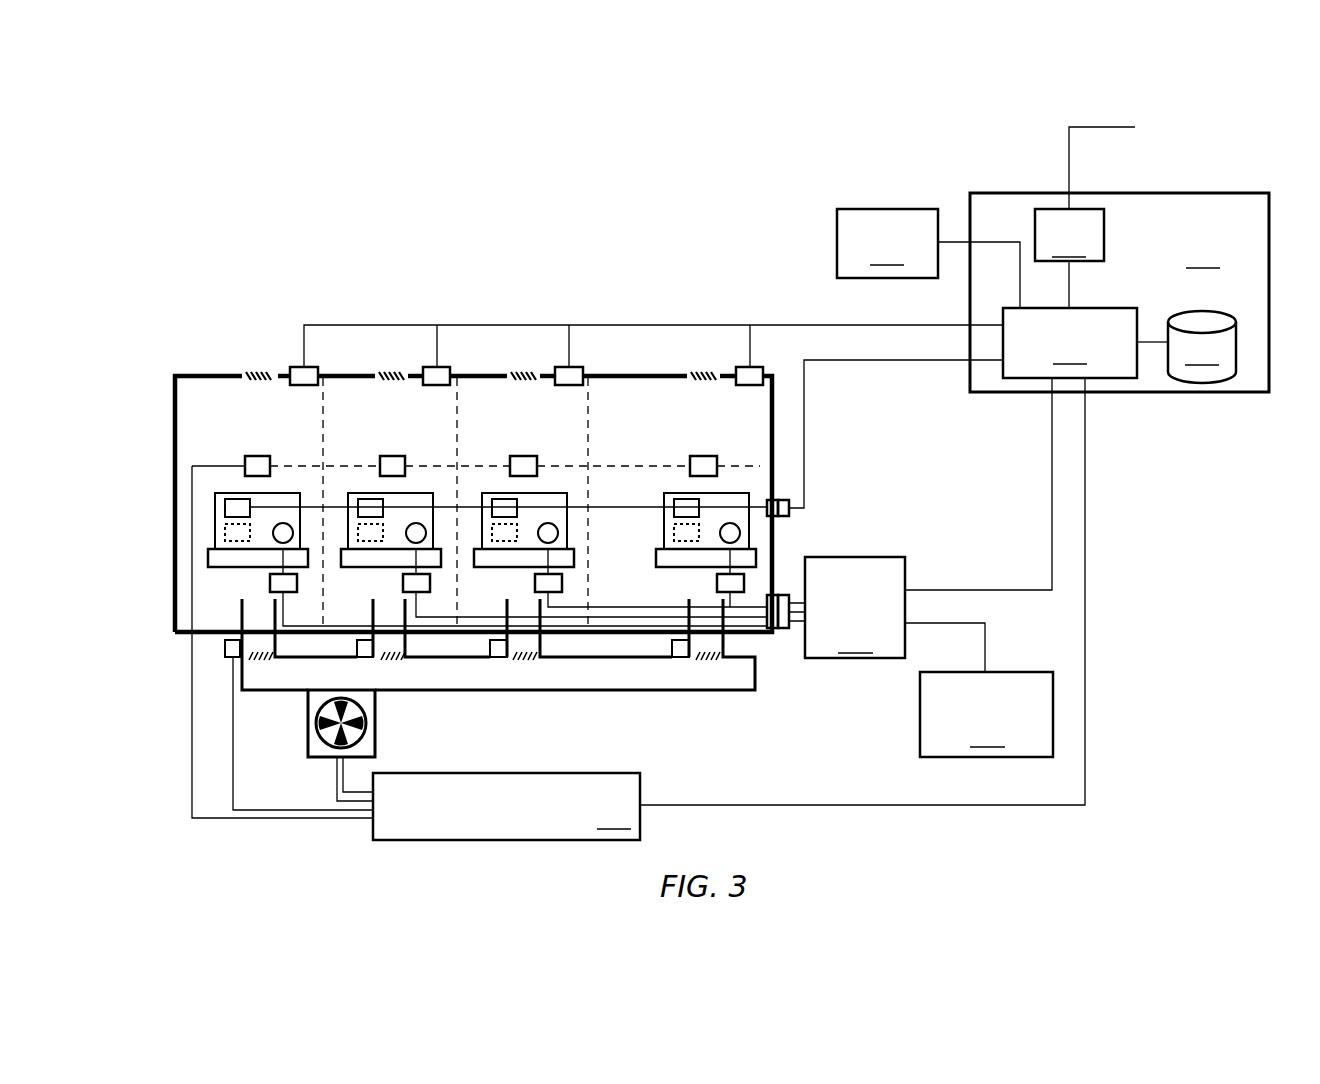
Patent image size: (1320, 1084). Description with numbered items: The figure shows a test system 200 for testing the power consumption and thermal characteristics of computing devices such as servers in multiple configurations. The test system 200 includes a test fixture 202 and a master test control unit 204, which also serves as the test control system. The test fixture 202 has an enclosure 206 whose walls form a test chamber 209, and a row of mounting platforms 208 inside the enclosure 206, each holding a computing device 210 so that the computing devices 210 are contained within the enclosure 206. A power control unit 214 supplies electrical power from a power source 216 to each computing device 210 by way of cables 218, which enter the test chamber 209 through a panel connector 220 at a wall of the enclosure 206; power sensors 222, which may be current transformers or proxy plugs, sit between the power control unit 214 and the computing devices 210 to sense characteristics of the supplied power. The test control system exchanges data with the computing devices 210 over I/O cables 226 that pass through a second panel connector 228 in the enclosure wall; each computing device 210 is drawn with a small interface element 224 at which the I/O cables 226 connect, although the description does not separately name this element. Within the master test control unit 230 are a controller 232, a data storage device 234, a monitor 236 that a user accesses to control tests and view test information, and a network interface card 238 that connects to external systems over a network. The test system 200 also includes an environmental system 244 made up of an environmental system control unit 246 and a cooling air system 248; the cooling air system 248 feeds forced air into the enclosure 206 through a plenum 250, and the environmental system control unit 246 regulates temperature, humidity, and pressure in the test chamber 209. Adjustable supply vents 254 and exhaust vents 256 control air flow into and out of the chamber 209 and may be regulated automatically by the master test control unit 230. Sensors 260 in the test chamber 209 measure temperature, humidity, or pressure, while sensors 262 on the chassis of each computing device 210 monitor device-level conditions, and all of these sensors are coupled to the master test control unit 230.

The test system 200 is at (520, 224).
The test fixture 202 is at (240, 340).
The master test control unit 204 is at (953, 158).
The enclosure 206 is at (174, 420).
The mounting platforms 208 is at (220, 569).
The test chamber 209 is at (408, 431).
The computing devices 210 is at (237, 500).
The power control unit 214 is at (928, 518).
The power source 216 is at (979, 690).
The cables 218 is at (795, 588).
The panel connector 220 is at (780, 630).
The power sensors 222 is at (400, 583).
The tester network interface 224 is at (665, 503).
The I/O cables 226 is at (740, 515).
The panel connector 228 is at (789, 518).
The master test control unit 230 is at (1119, 292).
The controller 232 is at (888, 556).
The data storage device 234 is at (1186, 347).
The monitor 236 is at (928, 258).
The network interface card 238 is at (1145, 205).
The environmental system 244 is at (372, 858).
The environmental system control unit 246 is at (506, 806).
The cooling air system 248 is at (377, 721).
The plenum 250 is at (620, 681).
The supply vents 254 is at (225, 648).
The exhaust vents 256 is at (569, 388).
The sensors 260 is at (258, 456).
The sensors 262 is at (658, 541).